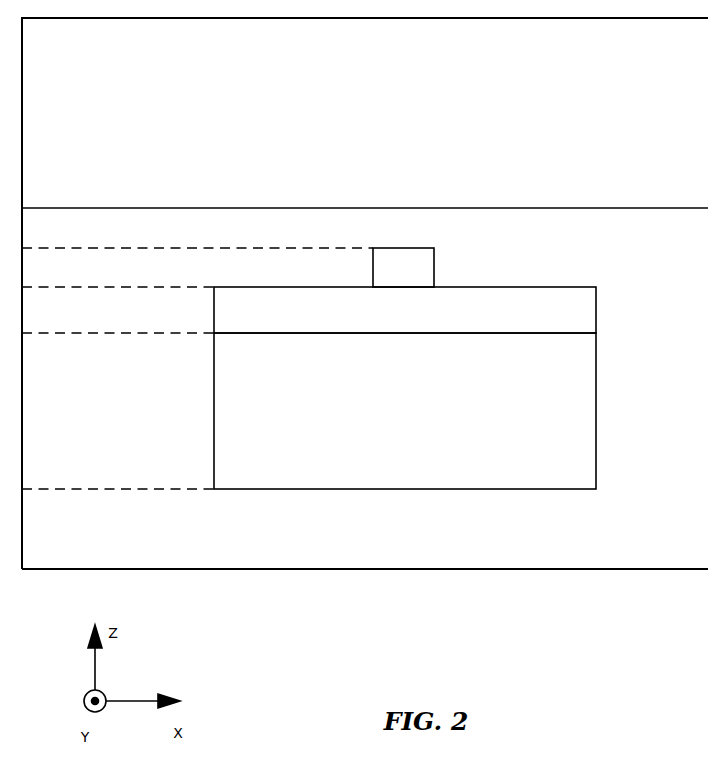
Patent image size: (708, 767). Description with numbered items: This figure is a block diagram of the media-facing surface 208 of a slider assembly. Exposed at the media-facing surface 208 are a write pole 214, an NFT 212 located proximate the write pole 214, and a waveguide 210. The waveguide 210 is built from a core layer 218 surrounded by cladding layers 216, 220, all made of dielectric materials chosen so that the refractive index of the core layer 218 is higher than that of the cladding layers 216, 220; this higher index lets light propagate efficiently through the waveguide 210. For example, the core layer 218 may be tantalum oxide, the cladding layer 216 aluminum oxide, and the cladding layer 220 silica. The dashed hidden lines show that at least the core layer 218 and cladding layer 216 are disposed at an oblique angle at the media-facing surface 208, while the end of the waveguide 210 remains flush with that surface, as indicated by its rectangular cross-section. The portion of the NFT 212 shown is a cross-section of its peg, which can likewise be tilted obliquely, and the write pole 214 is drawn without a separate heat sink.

The media-facing surface 208 is at (603, 571).
The waveguide 210 is at (349, 388).
The NFT 212 is at (228, 267).
The write pole 214 is at (365, 151).
The cladding layer 216 is at (309, 310).
The core layer 218 is at (405, 411).
The cladding layer 220 is at (118, 515).